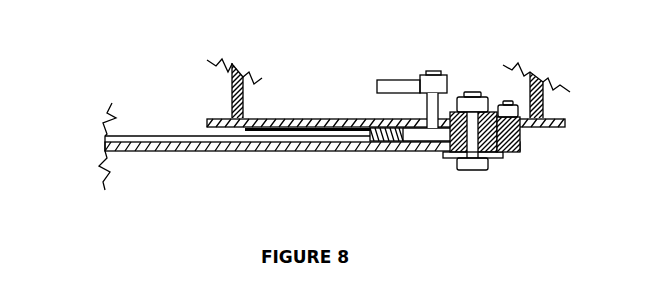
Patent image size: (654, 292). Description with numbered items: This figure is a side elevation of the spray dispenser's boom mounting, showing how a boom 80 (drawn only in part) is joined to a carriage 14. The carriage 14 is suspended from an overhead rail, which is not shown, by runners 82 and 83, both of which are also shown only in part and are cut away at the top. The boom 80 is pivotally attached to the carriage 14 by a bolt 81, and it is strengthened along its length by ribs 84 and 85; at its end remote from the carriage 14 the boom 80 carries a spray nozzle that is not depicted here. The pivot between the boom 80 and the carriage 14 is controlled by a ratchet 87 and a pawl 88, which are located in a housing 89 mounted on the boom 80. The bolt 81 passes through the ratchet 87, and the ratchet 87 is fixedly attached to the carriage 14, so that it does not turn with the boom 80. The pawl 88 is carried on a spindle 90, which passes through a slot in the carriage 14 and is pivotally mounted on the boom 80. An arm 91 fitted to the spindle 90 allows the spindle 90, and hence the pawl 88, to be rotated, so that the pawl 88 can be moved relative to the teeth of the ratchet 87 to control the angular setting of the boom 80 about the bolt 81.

The carriage 14 is at (305, 118).
The boom 80 is at (167, 151).
The bolt 81 is at (490, 108).
The runner 82 is at (233, 92).
The runner 83 is at (541, 100).
The rib 84 is at (370, 147).
The rib 85 is at (253, 137).
The ratchet 87 is at (517, 134).
The pawl 88 is at (418, 133).
The housing 89 is at (440, 159).
The spindle 90 is at (427, 115).
The arm 91 is at (403, 86).